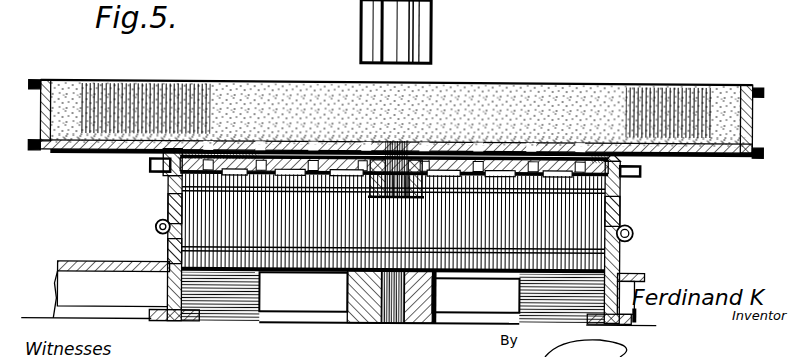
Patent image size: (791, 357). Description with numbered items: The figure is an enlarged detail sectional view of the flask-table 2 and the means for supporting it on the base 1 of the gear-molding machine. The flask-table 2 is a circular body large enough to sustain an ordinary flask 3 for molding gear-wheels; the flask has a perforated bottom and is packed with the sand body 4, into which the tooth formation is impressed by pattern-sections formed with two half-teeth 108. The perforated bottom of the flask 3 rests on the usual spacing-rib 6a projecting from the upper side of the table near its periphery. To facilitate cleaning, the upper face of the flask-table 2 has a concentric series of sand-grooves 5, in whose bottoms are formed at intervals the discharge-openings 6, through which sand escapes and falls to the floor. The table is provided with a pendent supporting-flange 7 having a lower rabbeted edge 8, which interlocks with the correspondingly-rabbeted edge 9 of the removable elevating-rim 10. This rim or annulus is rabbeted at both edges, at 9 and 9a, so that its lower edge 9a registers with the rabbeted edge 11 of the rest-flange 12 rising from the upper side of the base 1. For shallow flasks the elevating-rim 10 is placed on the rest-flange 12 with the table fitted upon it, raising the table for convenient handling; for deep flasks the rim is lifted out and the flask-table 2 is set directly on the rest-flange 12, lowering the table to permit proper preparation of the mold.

The half-teeth 108 is at (430, 20).
The flask 3 is at (40, 115).
The sand body 4 is at (74, 84).
The spacing-rib 6a is at (668, 174).
The pendent supporting-flange 7 is at (170, 182).
The lower rabbeted edge 8 is at (170, 190).
The sand-grooves 5 is at (317, 165).
The discharge-openings 6 is at (262, 176).
The flask-table 2 is at (623, 190).
The rabbeted edge 9 is at (170, 200).
The elevating-rim 10 is at (156, 228).
The rabbeted edge 9a is at (168, 250).
The rabbeted edge 11 is at (618, 260).
The rest-flange 12 is at (140, 264).
The base 1 is at (78, 265).